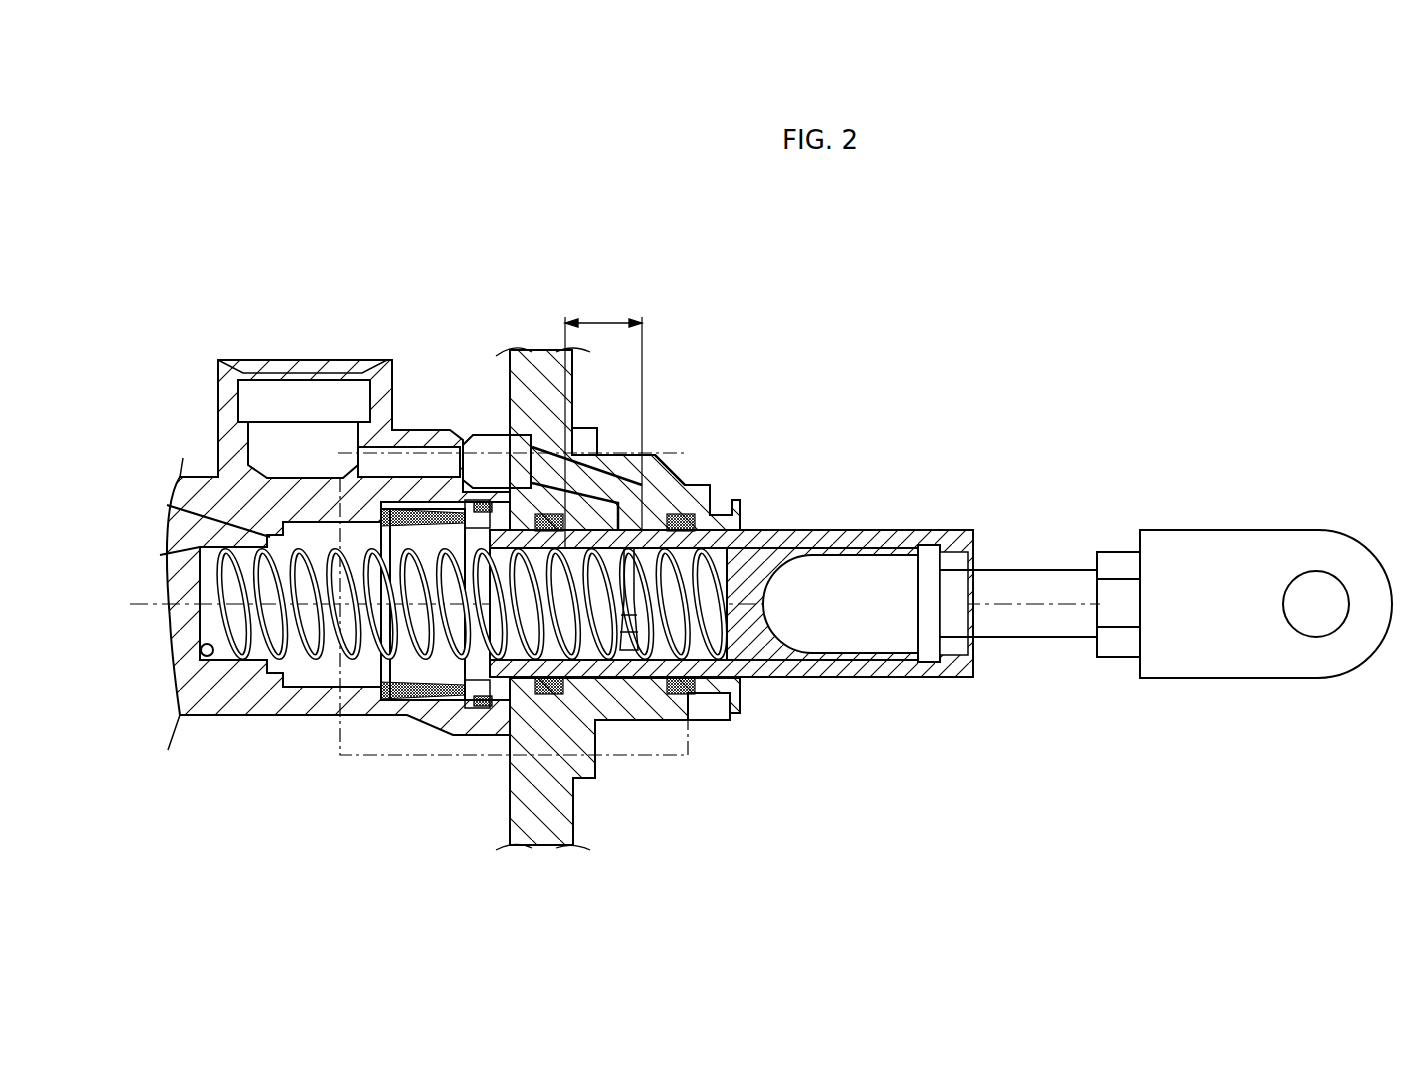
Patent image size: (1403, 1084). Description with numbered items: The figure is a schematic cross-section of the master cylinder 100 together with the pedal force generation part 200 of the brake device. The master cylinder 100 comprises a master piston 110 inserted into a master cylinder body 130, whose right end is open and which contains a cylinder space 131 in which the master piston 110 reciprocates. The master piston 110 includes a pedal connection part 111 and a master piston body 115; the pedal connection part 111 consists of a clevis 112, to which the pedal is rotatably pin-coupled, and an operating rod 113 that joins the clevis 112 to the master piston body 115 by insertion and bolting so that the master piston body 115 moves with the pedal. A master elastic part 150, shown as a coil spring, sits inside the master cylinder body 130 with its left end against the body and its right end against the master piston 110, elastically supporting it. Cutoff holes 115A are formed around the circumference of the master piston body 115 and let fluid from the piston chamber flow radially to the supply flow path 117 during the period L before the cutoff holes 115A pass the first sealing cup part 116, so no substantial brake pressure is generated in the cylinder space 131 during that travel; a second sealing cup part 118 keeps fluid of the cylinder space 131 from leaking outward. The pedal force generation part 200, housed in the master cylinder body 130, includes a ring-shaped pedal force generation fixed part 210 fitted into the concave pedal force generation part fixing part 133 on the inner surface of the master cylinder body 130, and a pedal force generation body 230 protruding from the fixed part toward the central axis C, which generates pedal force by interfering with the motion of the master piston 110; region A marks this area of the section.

The master cylinder 100 is at (754, 552).
The master piston 110 is at (941, 517).
The pedal connection part 111 is at (1166, 540).
The clevis 112 is at (1266, 562).
The operating rod 113 is at (1032, 580).
The master piston body 115 is at (887, 540).
The cutoff holes 115A is at (643, 488).
The first sealing cup part 116 is at (521, 440).
The supply flow path 117 is at (596, 486).
The second sealing cup part 118 is at (707, 497).
The master cylinder body 130 is at (424, 614).
The cylinder space 131 is at (327, 669).
The pedal force generation part fixing part 133 is at (382, 703).
The master elastic part 150 is at (630, 662).
The pedal force generation part 200 is at (446, 472).
The pedal force generation fixed part 210 is at (455, 448).
The pedal force generation body 230 is at (405, 532).
The region A is at (682, 455).
The central axis C is at (141, 606).
The period L is at (603, 420).